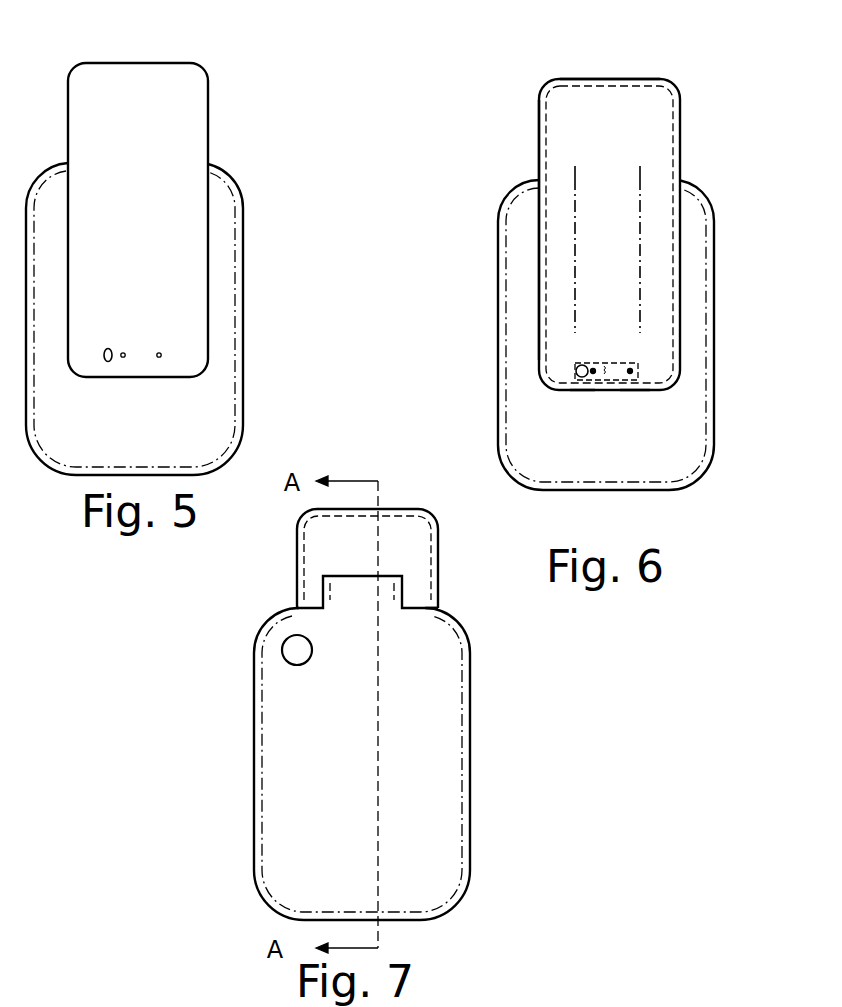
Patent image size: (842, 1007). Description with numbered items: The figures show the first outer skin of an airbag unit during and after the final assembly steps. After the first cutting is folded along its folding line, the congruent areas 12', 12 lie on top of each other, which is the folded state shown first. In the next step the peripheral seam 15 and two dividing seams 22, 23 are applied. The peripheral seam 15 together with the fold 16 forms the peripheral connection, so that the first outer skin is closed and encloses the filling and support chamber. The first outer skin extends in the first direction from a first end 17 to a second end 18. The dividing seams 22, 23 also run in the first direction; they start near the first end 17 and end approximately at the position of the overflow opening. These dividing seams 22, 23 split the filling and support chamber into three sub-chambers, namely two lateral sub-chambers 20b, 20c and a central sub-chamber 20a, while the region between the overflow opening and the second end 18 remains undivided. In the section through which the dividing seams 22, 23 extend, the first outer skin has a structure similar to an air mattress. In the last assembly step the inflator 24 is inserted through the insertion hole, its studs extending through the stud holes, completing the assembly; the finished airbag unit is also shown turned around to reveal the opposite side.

In FIG. 6, the portable electronic device 12 is at (613, 200).
In FIG. 5, the second portable electronic device 12' is at (171, 220).
In FIG. 6, the side edge of device 15 is at (543, 125).
In FIG. 6, the bottom opening 16 is at (633, 394).
In FIG. 6, the bottom opening 17 is at (582, 393).
In FIG. 6, the top edge of device 18 is at (598, 79).
In FIG. 6, the pouch central pocket portion 20a is at (597, 262).
In FIG. 6, the pouch left side portion 20b is at (557, 270).
In FIG. 6, the pouch right side portion 20c is at (660, 231).
In FIG. 6, the left guide line 22 is at (575, 178).
In FIG. 6, the right guide line 23 is at (641, 175).
In FIG. 6, the connector port 24 is at (575, 366).